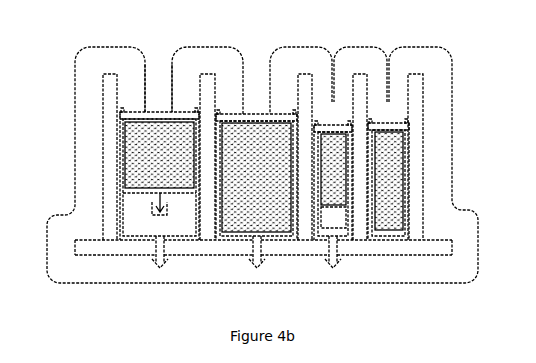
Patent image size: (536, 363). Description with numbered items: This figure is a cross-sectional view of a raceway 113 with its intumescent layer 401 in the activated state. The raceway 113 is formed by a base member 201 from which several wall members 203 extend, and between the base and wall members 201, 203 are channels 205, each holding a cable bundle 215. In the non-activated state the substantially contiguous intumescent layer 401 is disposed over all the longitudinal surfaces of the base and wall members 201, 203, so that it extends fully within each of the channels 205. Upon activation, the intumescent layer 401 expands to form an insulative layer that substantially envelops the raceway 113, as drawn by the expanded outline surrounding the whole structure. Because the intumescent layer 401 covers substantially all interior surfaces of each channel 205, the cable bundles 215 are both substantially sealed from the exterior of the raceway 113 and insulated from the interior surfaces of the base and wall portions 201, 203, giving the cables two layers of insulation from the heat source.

The raceway 113 is at (112, 250).
The base member 201 is at (228, 248).
The wall member 203 is at (207, 76).
The channel 205 is at (165, 84).
The cable bundle 215 is at (130, 155).
The intumescent layer 401 is at (307, 58).